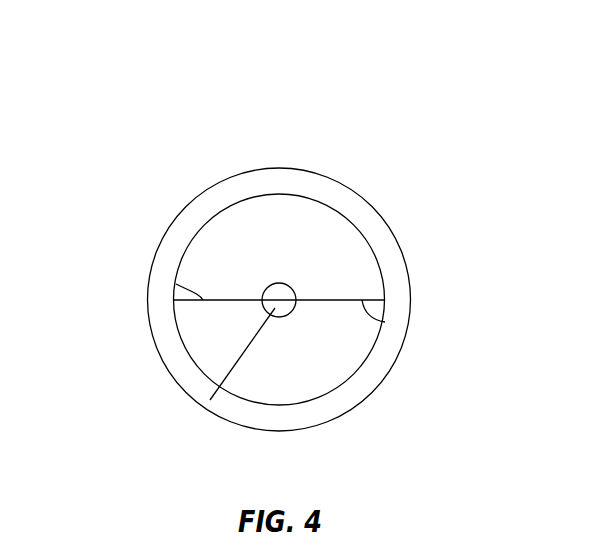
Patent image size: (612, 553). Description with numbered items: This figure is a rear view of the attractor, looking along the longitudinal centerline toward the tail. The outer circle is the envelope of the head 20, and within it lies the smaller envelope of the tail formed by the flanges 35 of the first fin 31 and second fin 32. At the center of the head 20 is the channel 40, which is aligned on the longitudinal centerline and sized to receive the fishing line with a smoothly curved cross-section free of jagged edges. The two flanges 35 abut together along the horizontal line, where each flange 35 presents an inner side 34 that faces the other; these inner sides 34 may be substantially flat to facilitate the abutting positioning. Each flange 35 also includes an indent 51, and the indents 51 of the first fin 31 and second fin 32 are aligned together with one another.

The head 20 is at (337, 198).
The first fin 31 is at (275, 215).
The second fin 32 is at (207, 337).
The inner side 34 is at (176, 284).
The flange 35 is at (222, 243).
The channel 40 is at (285, 297).
The indent 51 is at (210, 400).